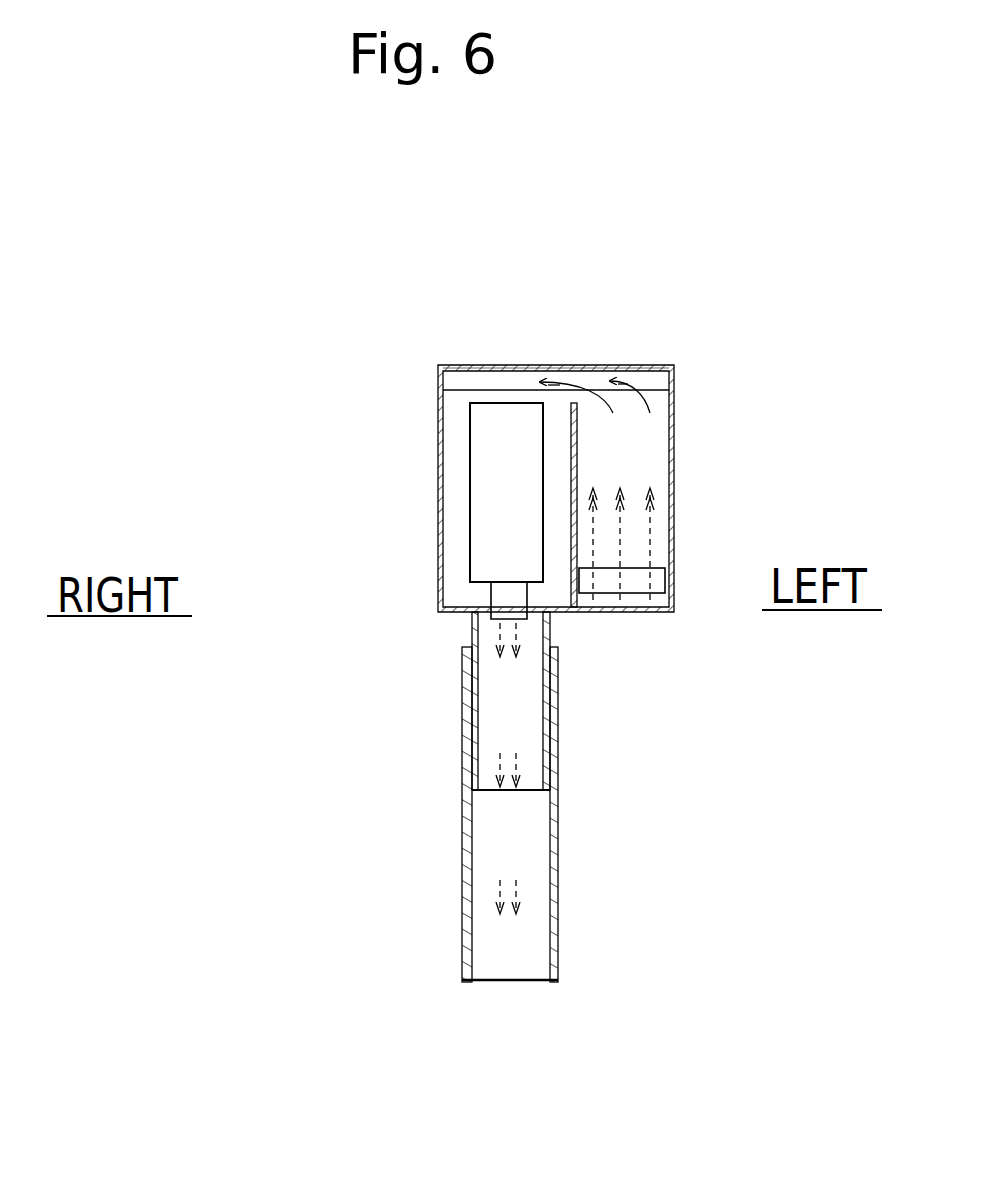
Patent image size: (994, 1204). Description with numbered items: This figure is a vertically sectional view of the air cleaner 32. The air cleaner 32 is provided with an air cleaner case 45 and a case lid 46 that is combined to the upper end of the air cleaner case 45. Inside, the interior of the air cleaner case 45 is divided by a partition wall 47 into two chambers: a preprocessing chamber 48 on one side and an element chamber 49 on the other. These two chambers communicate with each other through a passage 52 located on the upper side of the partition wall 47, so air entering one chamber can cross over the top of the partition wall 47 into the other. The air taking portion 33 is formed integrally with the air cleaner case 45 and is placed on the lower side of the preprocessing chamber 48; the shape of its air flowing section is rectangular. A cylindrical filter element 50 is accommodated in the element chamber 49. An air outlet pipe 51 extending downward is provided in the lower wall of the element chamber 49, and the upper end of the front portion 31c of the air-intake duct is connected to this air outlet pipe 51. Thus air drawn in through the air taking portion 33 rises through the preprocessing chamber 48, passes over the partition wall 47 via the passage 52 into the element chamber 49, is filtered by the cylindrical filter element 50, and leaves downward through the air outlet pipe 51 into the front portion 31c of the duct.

The air cleaner 32 is at (431, 498).
The air cleaner case 45 is at (674, 493).
The case lid 46 is at (488, 372).
The passage 52 is at (572, 378).
The preprocessing chamber 48 is at (638, 452).
The element chamber 49 is at (457, 533).
The cylindrical filter element 50 is at (505, 553).
The partition wall 47 is at (570, 548).
The air taking portion 33 is at (635, 577).
The air outlet pipe 51 is at (471, 717).
The front portion of the air-intake duct 31c is at (462, 893).